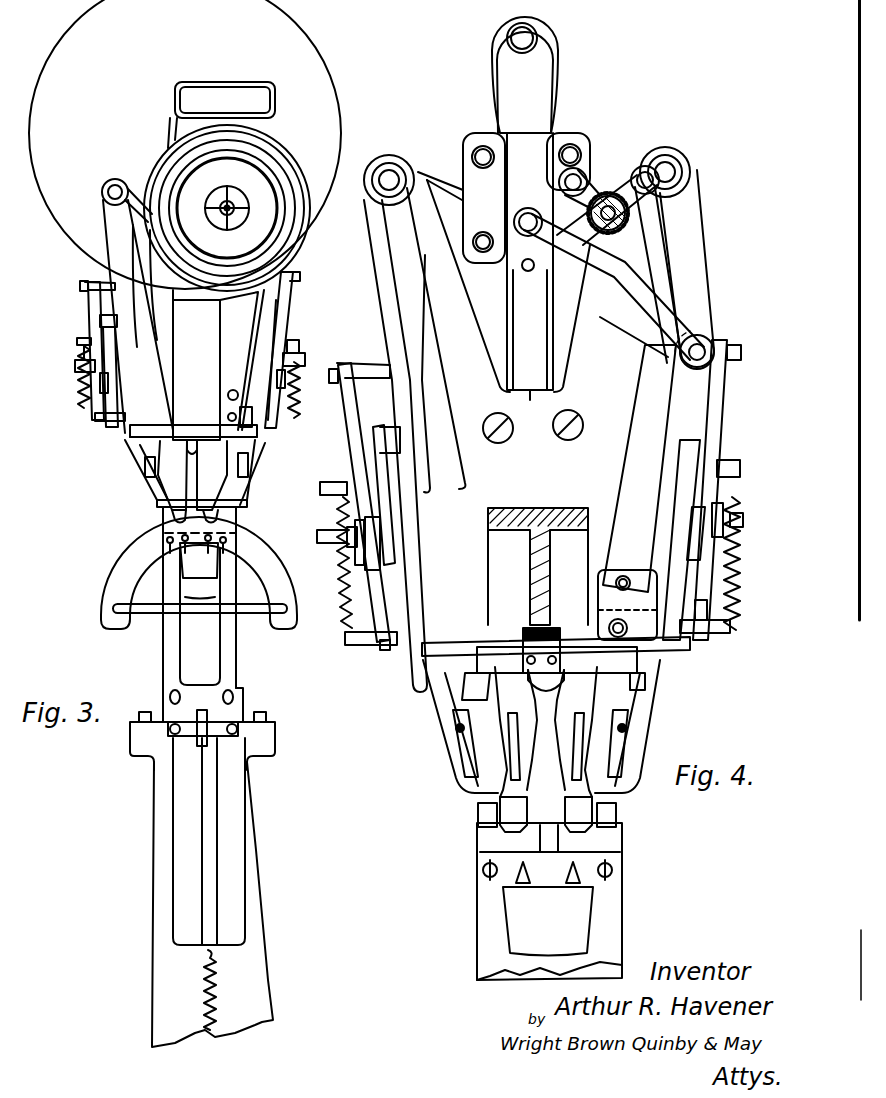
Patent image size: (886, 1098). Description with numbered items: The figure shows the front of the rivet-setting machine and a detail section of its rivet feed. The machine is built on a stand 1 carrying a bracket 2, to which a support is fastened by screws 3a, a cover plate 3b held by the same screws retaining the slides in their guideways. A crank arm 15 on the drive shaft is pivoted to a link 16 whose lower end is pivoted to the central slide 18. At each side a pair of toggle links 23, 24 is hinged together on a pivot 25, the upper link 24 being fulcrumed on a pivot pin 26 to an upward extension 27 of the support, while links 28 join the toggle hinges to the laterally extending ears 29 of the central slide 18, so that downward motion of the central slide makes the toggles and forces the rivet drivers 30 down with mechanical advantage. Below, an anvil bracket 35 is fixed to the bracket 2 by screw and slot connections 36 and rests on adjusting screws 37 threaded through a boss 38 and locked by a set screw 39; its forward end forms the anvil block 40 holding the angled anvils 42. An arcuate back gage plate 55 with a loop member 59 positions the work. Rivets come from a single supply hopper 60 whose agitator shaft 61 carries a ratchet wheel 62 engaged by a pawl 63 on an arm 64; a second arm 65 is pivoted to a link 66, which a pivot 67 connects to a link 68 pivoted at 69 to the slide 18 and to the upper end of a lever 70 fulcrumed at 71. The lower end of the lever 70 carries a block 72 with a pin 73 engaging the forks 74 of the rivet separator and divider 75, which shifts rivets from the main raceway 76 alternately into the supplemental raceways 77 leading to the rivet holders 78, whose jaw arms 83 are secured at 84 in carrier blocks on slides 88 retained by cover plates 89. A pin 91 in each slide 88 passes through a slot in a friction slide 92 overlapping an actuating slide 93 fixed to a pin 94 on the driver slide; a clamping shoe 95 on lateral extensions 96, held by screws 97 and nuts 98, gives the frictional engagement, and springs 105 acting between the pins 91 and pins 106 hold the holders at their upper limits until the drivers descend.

In FIG. 3, the stand 1 is at (156, 880).
In FIG. 3, the bracket 2 is at (250, 720).
In FIG. 4, the screws 3a is at (494, 414).
In FIG. 4, the cover plate 3b is at (531, 393).
In FIG. 4, the crank arm 15 is at (560, 80).
In FIG. 4, the link 16 is at (510, 80).
In FIG. 4, the central slide 18 is at (522, 312).
In FIG. 4, the toggle link 23 is at (472, 292).
In FIG. 3, the toggle link 24 is at (138, 198).
In FIG. 4, the toggle link 24 is at (445, 195).
In FIG. 4, the pivot 25 is at (483, 236).
In FIG. 3, the pivot pin 26 is at (113, 190).
In FIG. 4, the pivot pin 26 is at (390, 172).
In FIG. 3, the upward extension 27 is at (106, 212).
In FIG. 4, the upward extension 27 is at (383, 310).
In FIG. 4, the links 28 is at (483, 146).
In FIG. 4, the ears 29 is at (465, 145).
In FIG. 3, the rivet drivers 30 is at (168, 430).
In FIG. 4, the rivet drivers 30 is at (475, 690).
In FIG. 3, the anvil bracket 35 is at (205, 640).
In FIG. 4, the screw and slot connections 36 is at (483, 873).
In FIG. 3, the adjusting screws 37 is at (200, 745).
In FIG. 3, the boss 38 is at (190, 730).
In FIG. 3, the set screw 39 is at (240, 735).
In FIG. 3, the anvil block 40 is at (193, 560).
In FIG. 4, the anvil block 40 is at (510, 910).
In FIG. 4, the anvils 42 is at (571, 880).
In FIG. 3, the back gage plate 55 is at (120, 580).
In FIG. 3, the loop member 59 is at (150, 615).
In FIG. 3, the supply hopper 60 is at (165, 170).
In FIG. 4, the shaft 61 is at (628, 172).
In FIG. 4, the ratchet wheel 62 is at (609, 272).
In FIG. 4, the pawl 63 is at (600, 190).
In FIG. 4, the arm 64 is at (586, 200).
In FIG. 4, the second arm 65 is at (650, 208).
In FIG. 4, the link 66 is at (690, 270).
In FIG. 4, the pivot 67 is at (702, 348).
In FIG. 4, the link 68 is at (628, 313).
In FIG. 4, the pivot 69 is at (530, 210).
In FIG. 3, the lever 70 is at (262, 318).
In FIG. 4, the lever 70 is at (656, 445).
In FIG. 3, the fulcrum 71 is at (227, 394).
In FIG. 4, the fulcrum 71 is at (625, 575).
In FIG. 3, the block 72 is at (246, 418).
In FIG. 4, the block 72 is at (640, 620).
In FIG. 4, the pin 73 is at (640, 660).
In FIG. 4, the forks 74 is at (640, 688).
In FIG. 4, the rivet separator and divider 75 is at (518, 630).
In FIG. 4, the main raceway 76 is at (533, 600).
In FIG. 3, the supplemental raceways 77 is at (187, 430).
In FIG. 4, the supplemental raceways 77 is at (535, 740).
In FIG. 3, the rivet holders 78 is at (175, 517).
In FIG. 4, the rivet holders 78 is at (500, 815).
In FIG. 4, the arms 83 is at (465, 760).
In FIG. 4, the securement 84 is at (457, 731).
In FIG. 3, the slides 88 is at (156, 480).
In FIG. 4, the slides 88 is at (438, 700).
In FIG. 3, the cover plates 89 is at (130, 460).
In FIG. 4, the cover plates 89 is at (388, 510).
In FIG. 3, the pin 91 is at (110, 424).
In FIG. 4, the pin 91 is at (350, 645).
In FIG. 3, the friction slide 92 is at (103, 410).
In FIG. 4, the friction slide 92 is at (384, 652).
In FIG. 3, the actuating slide 93 is at (90, 305).
In FIG. 4, the actuating slide 93 is at (360, 445).
In FIG. 3, the pin 94 is at (95, 280).
In FIG. 4, the pin 94 is at (377, 366).
In FIG. 3, the clamping shoe 95 is at (75, 364).
In FIG. 4, the clamping shoe 95 is at (359, 565).
In FIG. 4, the lateral extensions 96 is at (380, 538).
In FIG. 4, the screws 97 is at (317, 536).
In FIG. 4, the nuts 98 is at (345, 545).
In FIG. 3, the springs 105 is at (80, 395).
In FIG. 4, the springs 105 is at (344, 605).
In FIG. 4, the pins 106 is at (320, 488).